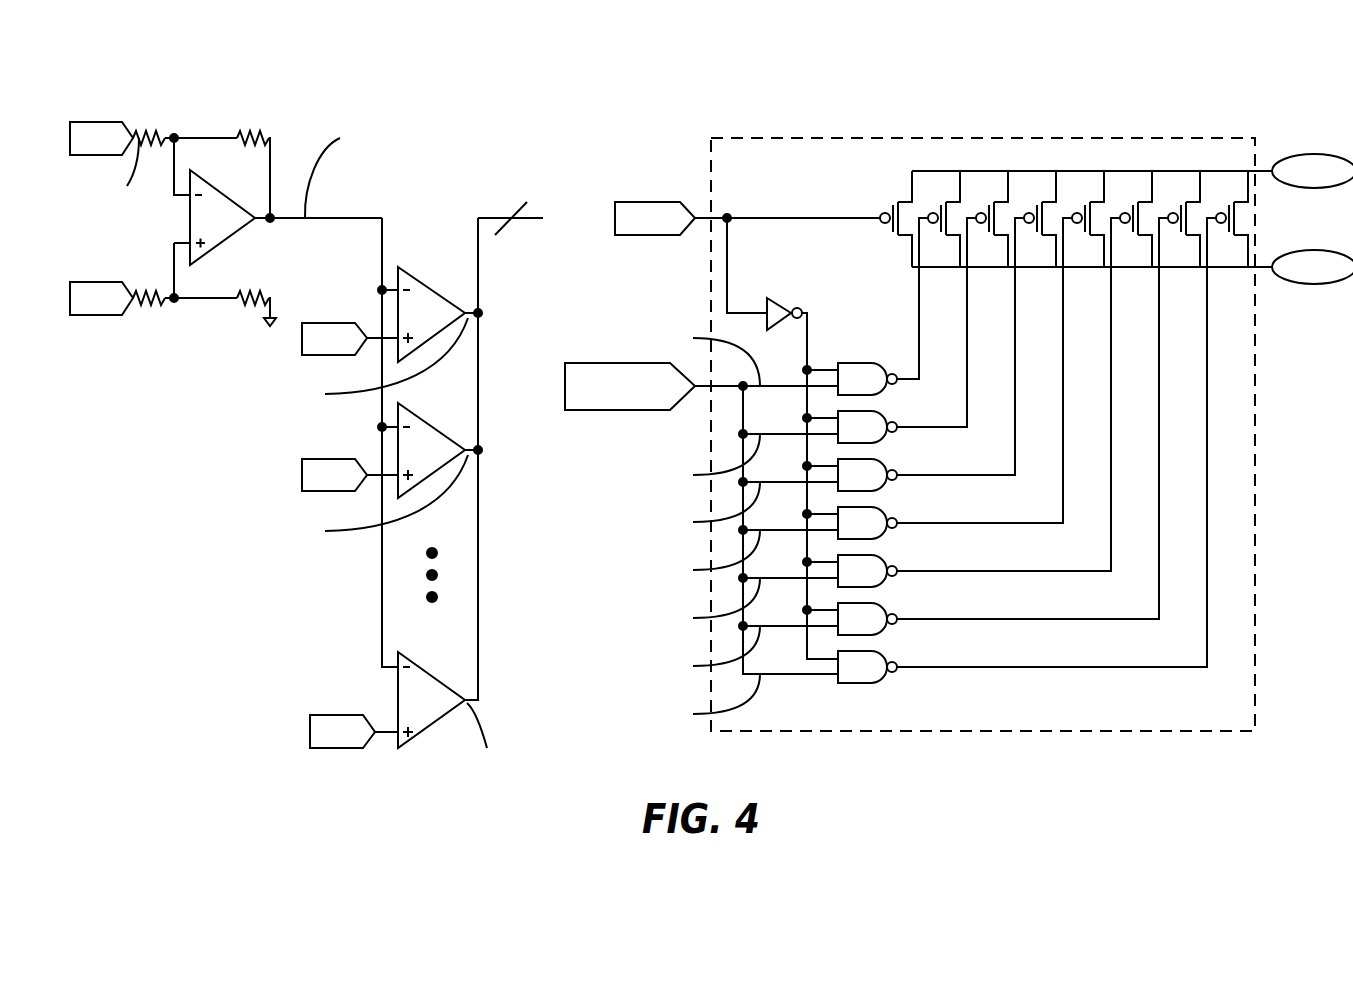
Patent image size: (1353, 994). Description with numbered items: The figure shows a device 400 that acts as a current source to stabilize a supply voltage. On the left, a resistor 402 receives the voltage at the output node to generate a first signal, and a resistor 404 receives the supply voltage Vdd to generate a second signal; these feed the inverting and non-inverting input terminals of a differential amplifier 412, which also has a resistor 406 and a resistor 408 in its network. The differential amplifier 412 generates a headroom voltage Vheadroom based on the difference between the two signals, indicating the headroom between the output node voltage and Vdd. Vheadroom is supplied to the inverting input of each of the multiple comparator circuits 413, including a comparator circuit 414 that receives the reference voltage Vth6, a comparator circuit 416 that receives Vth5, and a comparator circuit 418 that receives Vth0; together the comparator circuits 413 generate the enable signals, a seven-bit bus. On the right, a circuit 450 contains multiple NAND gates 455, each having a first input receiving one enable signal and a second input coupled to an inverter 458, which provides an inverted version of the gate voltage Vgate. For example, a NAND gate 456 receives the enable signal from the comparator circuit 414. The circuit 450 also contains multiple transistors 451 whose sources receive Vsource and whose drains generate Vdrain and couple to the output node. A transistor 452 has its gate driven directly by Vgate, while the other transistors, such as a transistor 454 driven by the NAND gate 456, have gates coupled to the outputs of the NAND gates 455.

The device 400 is at (164, 61).
The resistor 402 is at (160, 131).
The resistor 404 is at (156, 292).
The resistor 406 is at (262, 131).
The resistor 408 is at (256, 292).
The differential amplifier 412 is at (212, 182).
The multiple comparator circuits 413 is at (417, 210).
The comparator circuit 414 is at (410, 273).
The comparator circuit 416 is at (417, 410).
The comparator circuit 418 is at (415, 659).
The circuit 450 is at (798, 138).
The multiple transistors 451 is at (840, 191).
The transistor 452 is at (899, 200).
The transistor 454 is at (947, 200).
The multiple NAND gates 455 is at (866, 300).
The NAND gate 456 is at (853, 363).
The inverter 458 is at (782, 298).